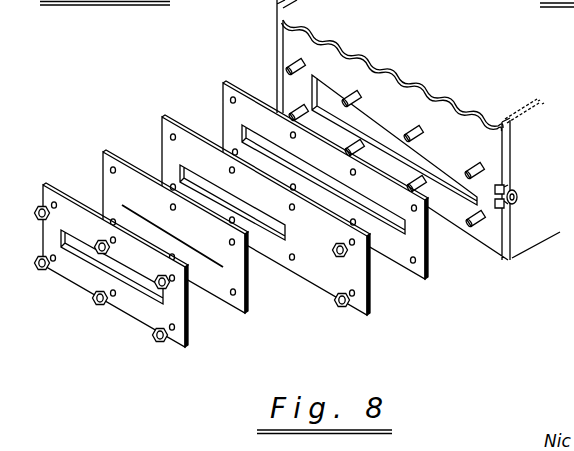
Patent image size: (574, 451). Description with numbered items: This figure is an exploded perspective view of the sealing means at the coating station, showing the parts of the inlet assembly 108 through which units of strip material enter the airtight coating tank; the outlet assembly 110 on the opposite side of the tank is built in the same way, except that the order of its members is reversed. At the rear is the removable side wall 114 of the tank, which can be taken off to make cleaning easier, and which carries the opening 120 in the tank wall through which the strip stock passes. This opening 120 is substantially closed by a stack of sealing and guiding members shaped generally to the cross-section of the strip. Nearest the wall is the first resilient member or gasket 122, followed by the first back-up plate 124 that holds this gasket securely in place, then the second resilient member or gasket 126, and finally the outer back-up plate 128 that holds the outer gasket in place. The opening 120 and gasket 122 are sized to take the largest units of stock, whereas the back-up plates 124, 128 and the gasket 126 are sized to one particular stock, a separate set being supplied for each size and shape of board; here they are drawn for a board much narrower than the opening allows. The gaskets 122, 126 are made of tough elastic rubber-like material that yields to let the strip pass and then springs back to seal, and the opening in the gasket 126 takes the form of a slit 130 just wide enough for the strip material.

The inlet assembly 108 is at (298, 186).
The outlet assembly 110 is at (90, 85).
The removable side wall 114 is at (522, 247).
The opening 120 is at (440, 171).
The first resilient member or gasket 122 is at (398, 258).
The first back-up plate 124 is at (328, 276).
The second resilient member or gasket 126 is at (220, 289).
The outer back-up plate 128 is at (152, 316).
The slit 130 is at (144, 218).